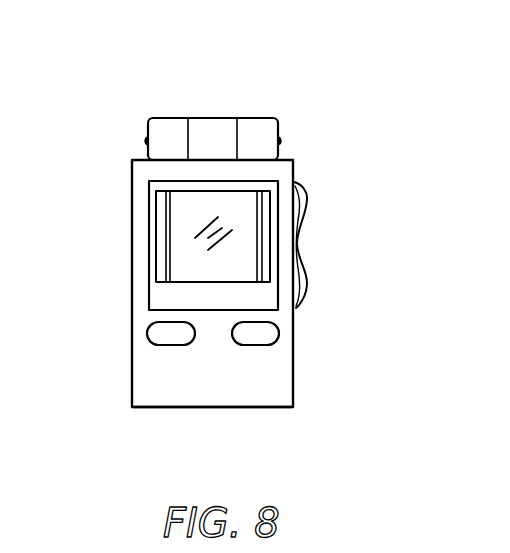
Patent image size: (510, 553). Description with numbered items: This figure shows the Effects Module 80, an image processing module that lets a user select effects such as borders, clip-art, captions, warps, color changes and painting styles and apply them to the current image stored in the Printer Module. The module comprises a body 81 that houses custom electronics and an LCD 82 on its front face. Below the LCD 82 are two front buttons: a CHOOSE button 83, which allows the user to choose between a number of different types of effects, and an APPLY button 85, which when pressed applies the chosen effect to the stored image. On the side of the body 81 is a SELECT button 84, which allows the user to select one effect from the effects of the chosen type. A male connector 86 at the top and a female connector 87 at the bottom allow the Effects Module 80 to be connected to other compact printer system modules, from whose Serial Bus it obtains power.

The portable device 80 is at (313, 101).
The body 81 is at (294, 376).
The LCD 82 is at (180, 230).
The CHOOSE button 83 is at (160, 335).
The SELECT button 84 is at (302, 195).
The APPLY button 85 is at (270, 333).
The male connector 86 is at (167, 118).
The female connector 87 is at (150, 407).